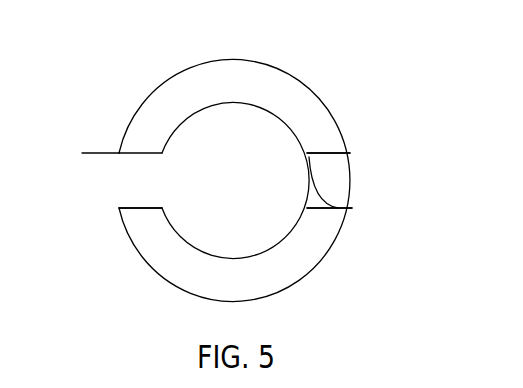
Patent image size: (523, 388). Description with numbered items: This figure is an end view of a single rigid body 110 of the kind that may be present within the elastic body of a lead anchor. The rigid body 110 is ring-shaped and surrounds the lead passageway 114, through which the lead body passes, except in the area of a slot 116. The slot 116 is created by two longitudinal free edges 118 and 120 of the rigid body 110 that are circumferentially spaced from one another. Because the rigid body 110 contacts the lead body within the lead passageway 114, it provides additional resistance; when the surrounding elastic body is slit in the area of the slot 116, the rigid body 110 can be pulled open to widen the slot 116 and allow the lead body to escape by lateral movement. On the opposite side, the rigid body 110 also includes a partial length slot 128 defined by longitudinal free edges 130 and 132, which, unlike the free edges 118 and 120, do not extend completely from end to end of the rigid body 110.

The single rigid body 110 is at (367, 83).
The lead passageway 114 is at (233, 182).
The slot 116 is at (125, 190).
The longitudinal free edge 118 is at (82, 153).
The longitudinal free edge 120 is at (119, 208).
The partial length slot 128 is at (335, 168).
The longitudinal free edge 130 is at (352, 151).
The longitudinal free edge 132 is at (355, 203).